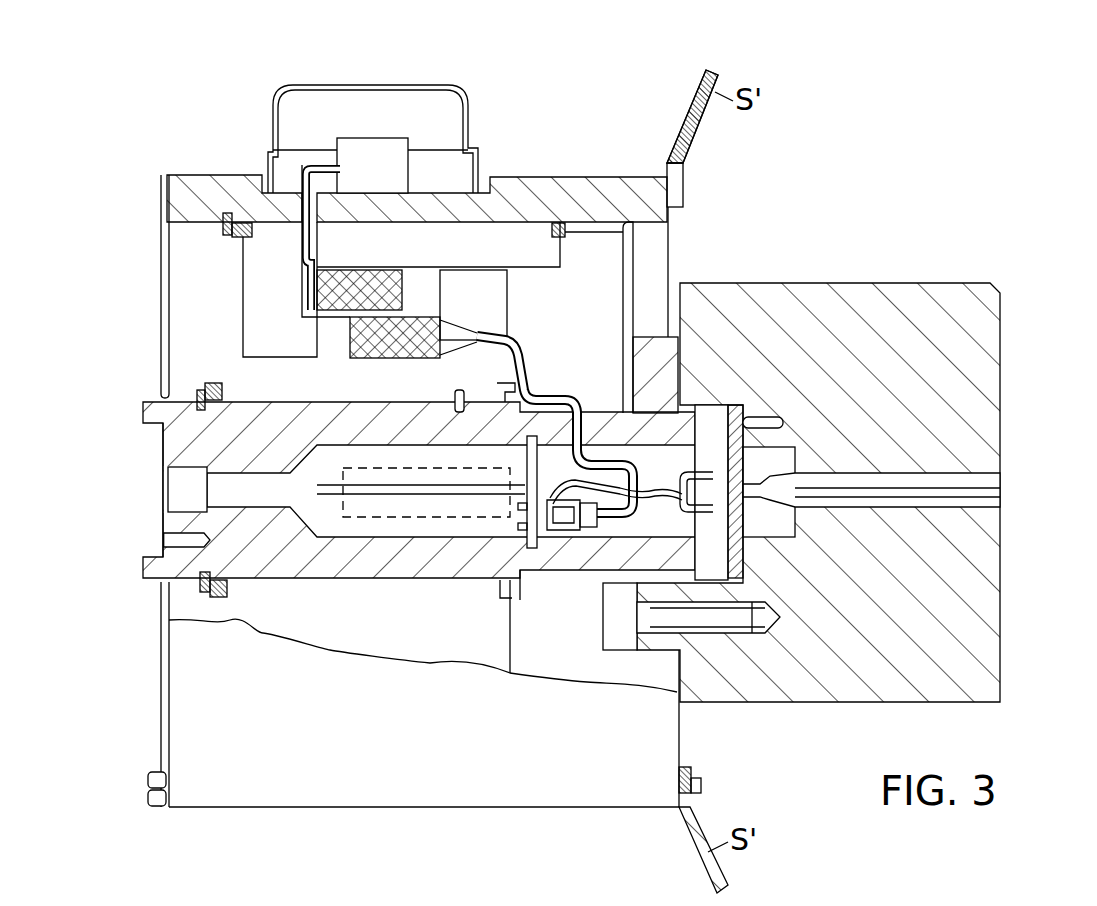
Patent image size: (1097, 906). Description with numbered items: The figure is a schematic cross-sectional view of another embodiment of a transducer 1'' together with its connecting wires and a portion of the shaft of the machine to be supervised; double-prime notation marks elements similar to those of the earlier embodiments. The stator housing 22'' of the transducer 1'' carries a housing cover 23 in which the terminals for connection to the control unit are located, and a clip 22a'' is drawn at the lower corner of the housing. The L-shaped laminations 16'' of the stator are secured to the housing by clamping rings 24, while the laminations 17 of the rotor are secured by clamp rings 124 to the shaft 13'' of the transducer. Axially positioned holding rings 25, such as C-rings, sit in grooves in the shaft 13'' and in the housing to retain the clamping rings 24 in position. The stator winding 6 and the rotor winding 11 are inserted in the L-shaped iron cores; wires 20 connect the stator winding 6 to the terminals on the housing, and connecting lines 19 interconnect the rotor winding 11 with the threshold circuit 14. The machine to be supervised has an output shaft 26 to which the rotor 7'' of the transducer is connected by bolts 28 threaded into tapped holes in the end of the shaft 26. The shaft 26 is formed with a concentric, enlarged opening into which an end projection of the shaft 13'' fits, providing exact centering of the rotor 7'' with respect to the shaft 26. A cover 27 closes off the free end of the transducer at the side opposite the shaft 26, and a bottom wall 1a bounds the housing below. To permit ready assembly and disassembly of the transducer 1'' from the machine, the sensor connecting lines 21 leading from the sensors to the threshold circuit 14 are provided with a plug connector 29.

The transducer 1'' is at (424, 713).
The bottom wall of housing 1a is at (547, 780).
The stator winding 6 is at (318, 290).
The rotor 7'' is at (304, 622).
The rotor winding 11 is at (350, 330).
The shaft 13'' is at (383, 490).
The threshold circuit 14 is at (347, 515).
The laminations of the stator 16'' is at (407, 234).
The laminations of the rotor 17 is at (668, 217).
The connecting lines 19 is at (523, 360).
The wires 20 is at (303, 252).
The connecting lines 21 is at (653, 493).
The stator housing 22'' is at (432, 171).
The clip 22a'' is at (110, 797).
The housing cover 23 is at (423, 86).
The clamping rings 24 is at (240, 225).
The holding rings 25 is at (227, 213).
The output shaft 26 is at (863, 343).
The cover 27 is at (169, 705).
The bolts 28 is at (660, 617).
The plug connector 29 is at (705, 470).
The clamp rings 124 is at (205, 390).